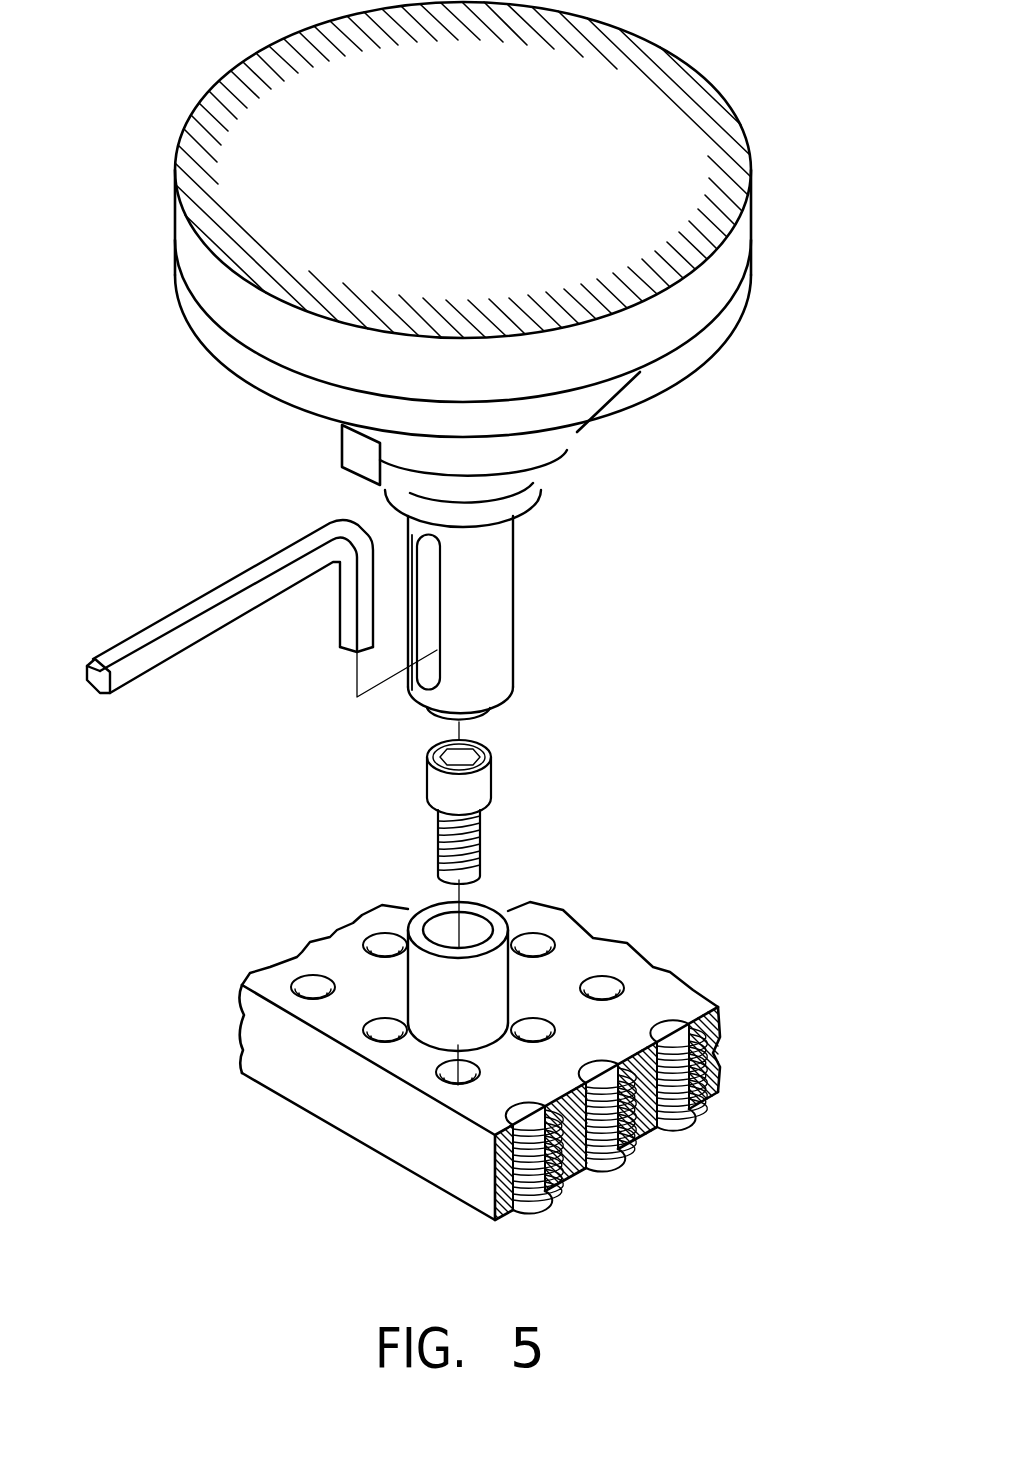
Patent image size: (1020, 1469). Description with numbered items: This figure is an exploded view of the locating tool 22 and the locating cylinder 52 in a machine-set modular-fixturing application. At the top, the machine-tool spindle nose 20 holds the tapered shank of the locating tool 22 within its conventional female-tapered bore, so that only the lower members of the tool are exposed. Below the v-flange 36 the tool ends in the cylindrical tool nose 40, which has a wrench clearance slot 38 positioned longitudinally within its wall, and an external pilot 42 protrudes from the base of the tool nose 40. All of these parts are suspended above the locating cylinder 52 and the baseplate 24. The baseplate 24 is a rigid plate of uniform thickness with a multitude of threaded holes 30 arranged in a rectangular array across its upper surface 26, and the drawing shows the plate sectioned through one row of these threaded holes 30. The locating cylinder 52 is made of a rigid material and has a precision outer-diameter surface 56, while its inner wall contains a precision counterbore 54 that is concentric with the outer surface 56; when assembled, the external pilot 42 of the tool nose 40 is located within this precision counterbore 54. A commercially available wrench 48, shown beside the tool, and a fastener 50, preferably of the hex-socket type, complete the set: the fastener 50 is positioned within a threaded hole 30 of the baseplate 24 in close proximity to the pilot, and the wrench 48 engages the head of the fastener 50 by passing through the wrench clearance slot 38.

The machine-tool spindle nose 20 is at (152, 268).
The locating tool 22 is at (543, 613).
The baseplate 24 is at (743, 1069).
The top surface of plate 26 is at (687, 990).
The threaded holes 30 is at (538, 933).
The v-flange 36 is at (522, 479).
The wrench clearance slot 38 is at (428, 681).
The tool nose 40 is at (503, 668).
The external pilot 42 is at (474, 717).
The wrench 48 is at (188, 608).
The fastener 50 is at (482, 786).
The locating cylinder 52 is at (543, 975).
The precision counterbore 54 is at (450, 918).
The precision outer-diameter surface 56 is at (403, 985).